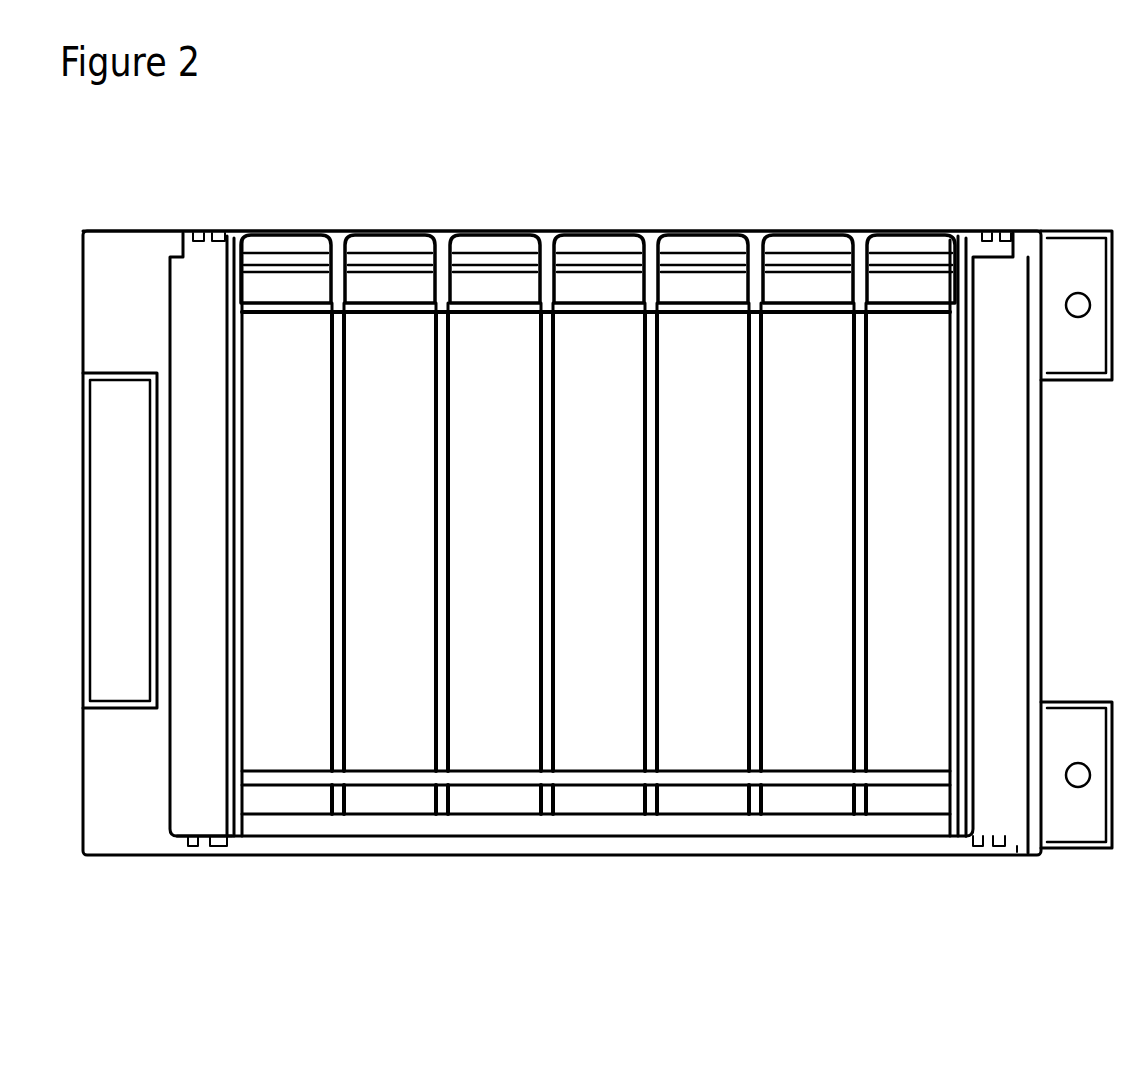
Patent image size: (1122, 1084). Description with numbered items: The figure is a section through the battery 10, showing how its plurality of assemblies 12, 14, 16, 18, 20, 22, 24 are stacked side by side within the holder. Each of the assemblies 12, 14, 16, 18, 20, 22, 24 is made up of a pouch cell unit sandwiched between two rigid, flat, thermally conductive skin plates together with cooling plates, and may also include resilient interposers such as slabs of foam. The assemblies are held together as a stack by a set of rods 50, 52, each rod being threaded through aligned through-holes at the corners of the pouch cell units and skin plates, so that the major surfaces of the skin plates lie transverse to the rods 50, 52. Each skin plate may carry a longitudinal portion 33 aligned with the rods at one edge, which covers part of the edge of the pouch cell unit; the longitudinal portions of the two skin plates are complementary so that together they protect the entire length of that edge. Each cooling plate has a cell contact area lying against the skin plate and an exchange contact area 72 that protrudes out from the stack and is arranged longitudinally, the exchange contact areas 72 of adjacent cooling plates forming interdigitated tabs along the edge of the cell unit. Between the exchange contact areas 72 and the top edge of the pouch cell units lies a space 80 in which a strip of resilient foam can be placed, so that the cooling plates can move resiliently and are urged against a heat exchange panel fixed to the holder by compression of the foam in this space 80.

The battery 10 is at (117, 887).
The assembly 12 is at (289, 756).
The assembly 14 is at (391, 756).
The assembly 16 is at (496, 756).
The assembly 18 is at (600, 756).
The assembly 20 is at (704, 756).
The assembly 22 is at (809, 756).
The assembly 24 is at (913, 756).
The longitudinal portion 33 is at (297, 258).
The rod 50 is at (812, 300).
The rod 52 is at (934, 778).
The exchange contact area 72 is at (284, 233).
The space 80 is at (382, 248).